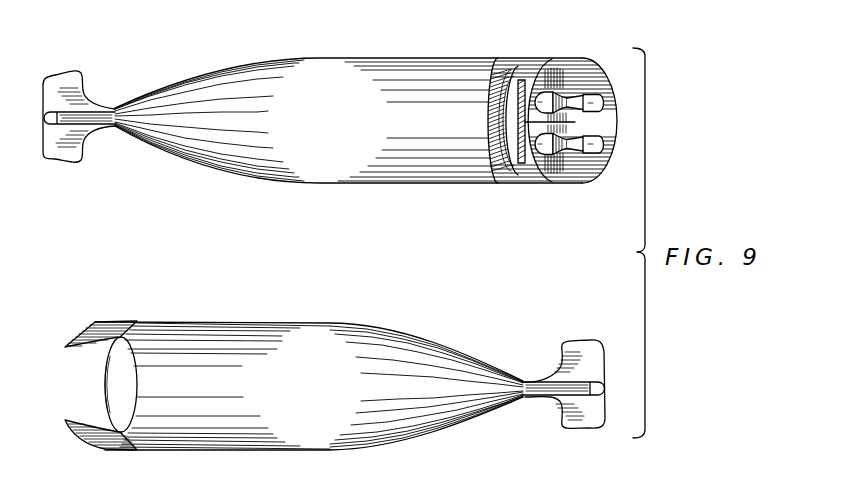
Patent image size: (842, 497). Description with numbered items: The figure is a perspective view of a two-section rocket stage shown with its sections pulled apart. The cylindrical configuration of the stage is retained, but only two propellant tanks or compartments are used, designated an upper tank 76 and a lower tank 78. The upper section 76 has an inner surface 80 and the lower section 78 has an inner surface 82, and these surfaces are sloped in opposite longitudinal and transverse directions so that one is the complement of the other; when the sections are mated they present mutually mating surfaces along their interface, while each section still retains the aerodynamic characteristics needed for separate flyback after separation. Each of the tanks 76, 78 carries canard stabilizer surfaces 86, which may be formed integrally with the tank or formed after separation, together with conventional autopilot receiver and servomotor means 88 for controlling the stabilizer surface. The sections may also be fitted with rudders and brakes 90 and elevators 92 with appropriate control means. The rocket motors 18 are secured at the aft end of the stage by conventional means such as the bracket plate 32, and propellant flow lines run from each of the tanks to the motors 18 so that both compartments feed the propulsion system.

The upper propellant tank 76 is at (377, 107).
The lower propellant tank 78 is at (309, 374).
The inner surface 80 is at (353, 128).
The inner surface 82 is at (316, 390).
The canard stabilizer surfaces 86 is at (82, 87).
The autopilot receiver and servomotor means 88 is at (47, 115).
The rudders and brakes 90 is at (583, 70).
The rocket motors 18 is at (600, 100).
The bracket plate 32 is at (519, 122).
The elevators 92 is at (598, 128).